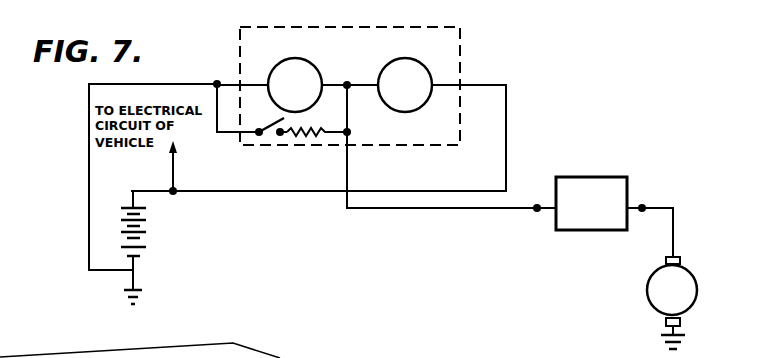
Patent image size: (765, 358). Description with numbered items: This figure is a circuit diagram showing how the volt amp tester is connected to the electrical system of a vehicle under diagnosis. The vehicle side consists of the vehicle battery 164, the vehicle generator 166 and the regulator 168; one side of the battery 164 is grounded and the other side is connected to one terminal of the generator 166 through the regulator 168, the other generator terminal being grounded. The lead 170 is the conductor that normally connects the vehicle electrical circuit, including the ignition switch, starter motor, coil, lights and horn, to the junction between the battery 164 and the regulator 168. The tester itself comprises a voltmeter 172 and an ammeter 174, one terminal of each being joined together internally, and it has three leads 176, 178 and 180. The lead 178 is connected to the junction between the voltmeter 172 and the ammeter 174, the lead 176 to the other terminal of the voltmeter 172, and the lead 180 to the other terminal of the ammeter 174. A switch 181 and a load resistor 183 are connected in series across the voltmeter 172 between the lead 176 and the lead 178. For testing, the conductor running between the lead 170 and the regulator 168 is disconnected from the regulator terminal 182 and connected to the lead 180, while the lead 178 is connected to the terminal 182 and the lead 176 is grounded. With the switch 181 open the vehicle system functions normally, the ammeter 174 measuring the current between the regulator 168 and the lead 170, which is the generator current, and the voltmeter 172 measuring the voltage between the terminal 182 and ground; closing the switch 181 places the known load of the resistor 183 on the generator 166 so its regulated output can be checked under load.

The vehicle battery 164 is at (143, 240).
The vehicle generator 166 is at (689, 268).
The regulator 168 is at (568, 226).
The lead 170 is at (173, 167).
The voltmeter 172 is at (312, 74).
The ammeter 174 is at (429, 61).
The lead 176 is at (89, 175).
The lead 178 is at (347, 186).
The lead 180 is at (506, 163).
The switch 181 is at (275, 121).
The terminal 182 is at (537, 211).
The load resistor 183 is at (311, 129).